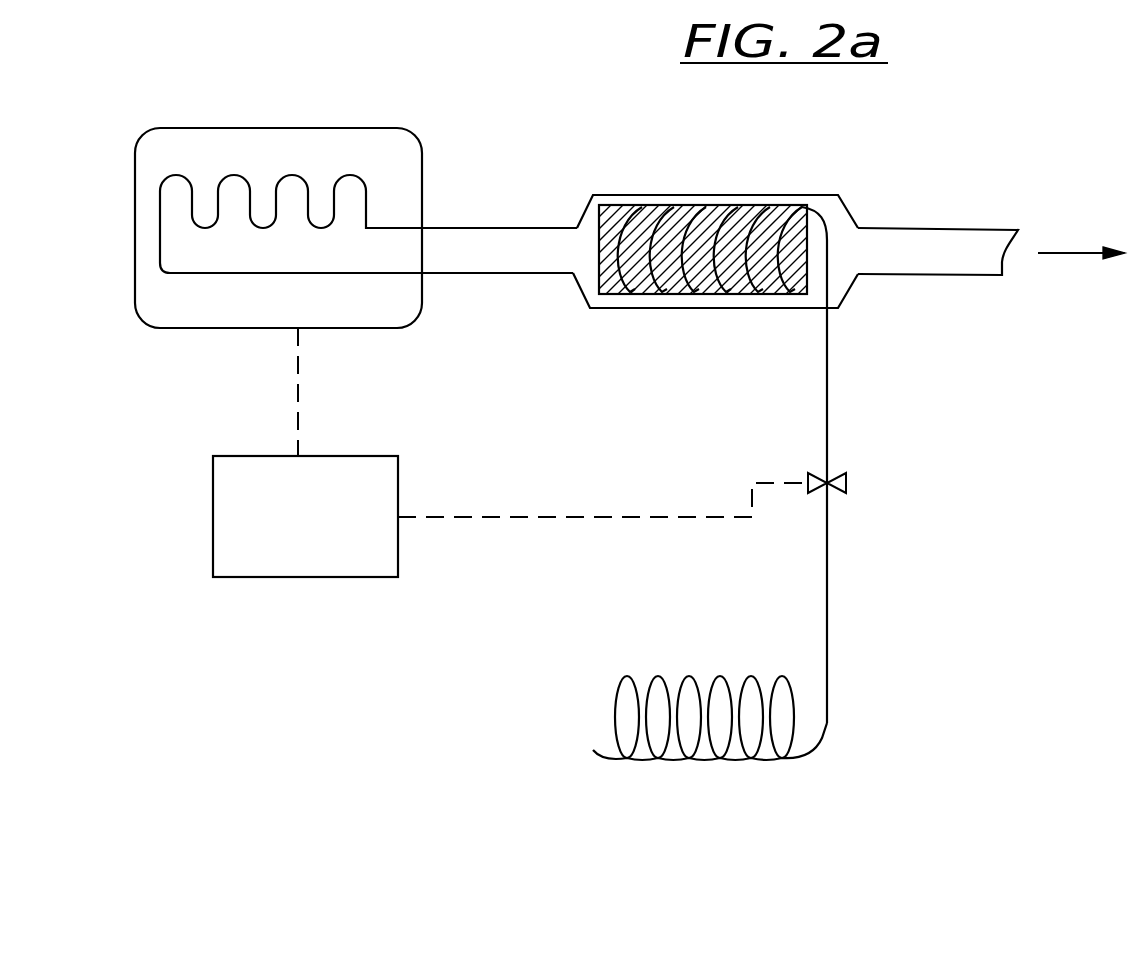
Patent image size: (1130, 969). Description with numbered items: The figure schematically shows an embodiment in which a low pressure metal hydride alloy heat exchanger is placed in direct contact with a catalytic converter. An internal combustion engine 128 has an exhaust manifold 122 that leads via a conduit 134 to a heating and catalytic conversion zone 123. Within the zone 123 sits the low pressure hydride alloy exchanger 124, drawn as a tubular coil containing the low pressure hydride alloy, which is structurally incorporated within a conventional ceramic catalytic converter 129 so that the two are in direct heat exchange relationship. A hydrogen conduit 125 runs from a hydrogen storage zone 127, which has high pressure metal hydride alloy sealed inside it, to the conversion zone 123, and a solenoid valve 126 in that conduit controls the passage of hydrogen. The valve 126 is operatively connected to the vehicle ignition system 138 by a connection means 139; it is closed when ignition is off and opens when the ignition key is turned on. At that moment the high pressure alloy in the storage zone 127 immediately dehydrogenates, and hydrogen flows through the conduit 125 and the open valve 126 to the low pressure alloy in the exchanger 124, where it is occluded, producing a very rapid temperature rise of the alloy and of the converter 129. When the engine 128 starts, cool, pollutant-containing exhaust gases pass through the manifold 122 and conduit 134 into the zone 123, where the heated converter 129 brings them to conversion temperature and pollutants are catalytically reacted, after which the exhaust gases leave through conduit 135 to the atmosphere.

The exhaust manifold 122 is at (202, 262).
The heating and catalytic conversion zone 123 is at (727, 202).
The low pressure hydride alloy exchanger 124 is at (620, 283).
The hydrogen conduit 125 is at (827, 442).
The solenoid valve 126 is at (845, 485).
The hydrogen storage zone 127 is at (627, 678).
The internal combustion engine 128 is at (373, 142).
The catalytic converter 129 is at (597, 255).
The conduit 134 is at (490, 236).
The conduit 135 is at (945, 237).
The vehicle ignition system 138 is at (248, 577).
The connection means 139 is at (497, 517).